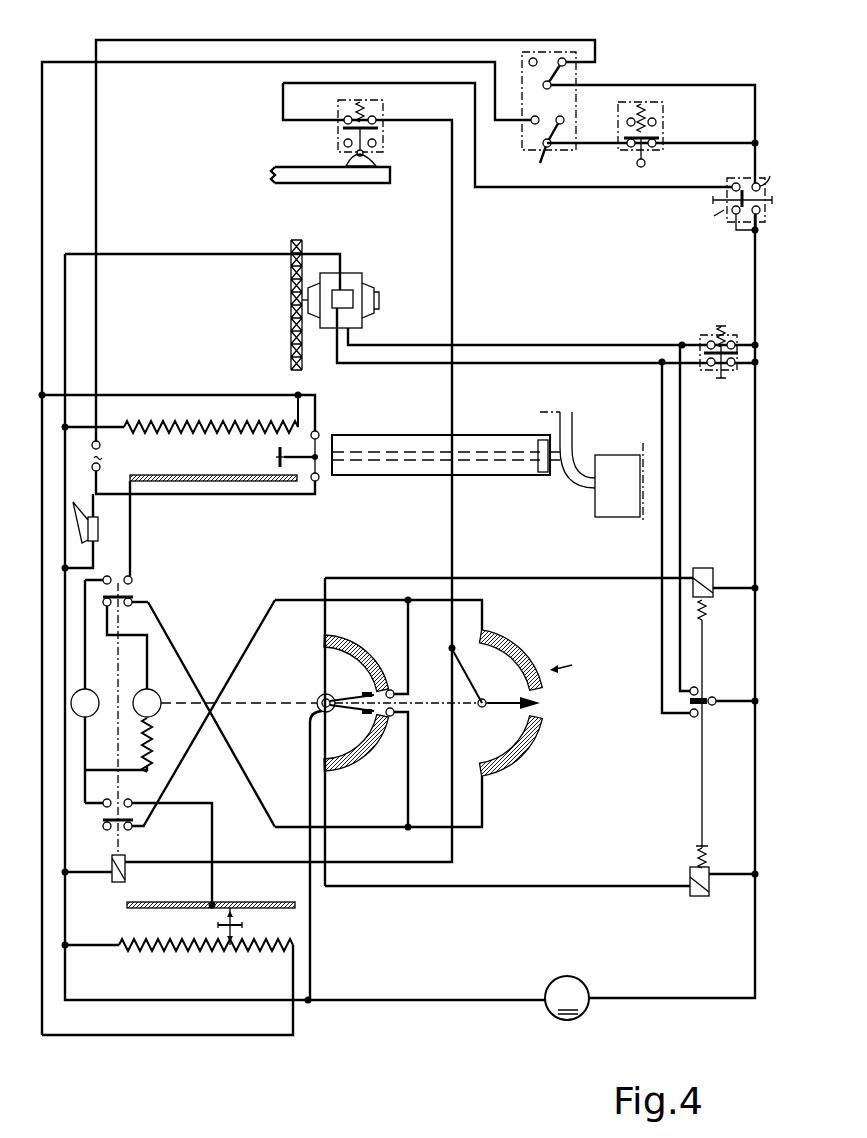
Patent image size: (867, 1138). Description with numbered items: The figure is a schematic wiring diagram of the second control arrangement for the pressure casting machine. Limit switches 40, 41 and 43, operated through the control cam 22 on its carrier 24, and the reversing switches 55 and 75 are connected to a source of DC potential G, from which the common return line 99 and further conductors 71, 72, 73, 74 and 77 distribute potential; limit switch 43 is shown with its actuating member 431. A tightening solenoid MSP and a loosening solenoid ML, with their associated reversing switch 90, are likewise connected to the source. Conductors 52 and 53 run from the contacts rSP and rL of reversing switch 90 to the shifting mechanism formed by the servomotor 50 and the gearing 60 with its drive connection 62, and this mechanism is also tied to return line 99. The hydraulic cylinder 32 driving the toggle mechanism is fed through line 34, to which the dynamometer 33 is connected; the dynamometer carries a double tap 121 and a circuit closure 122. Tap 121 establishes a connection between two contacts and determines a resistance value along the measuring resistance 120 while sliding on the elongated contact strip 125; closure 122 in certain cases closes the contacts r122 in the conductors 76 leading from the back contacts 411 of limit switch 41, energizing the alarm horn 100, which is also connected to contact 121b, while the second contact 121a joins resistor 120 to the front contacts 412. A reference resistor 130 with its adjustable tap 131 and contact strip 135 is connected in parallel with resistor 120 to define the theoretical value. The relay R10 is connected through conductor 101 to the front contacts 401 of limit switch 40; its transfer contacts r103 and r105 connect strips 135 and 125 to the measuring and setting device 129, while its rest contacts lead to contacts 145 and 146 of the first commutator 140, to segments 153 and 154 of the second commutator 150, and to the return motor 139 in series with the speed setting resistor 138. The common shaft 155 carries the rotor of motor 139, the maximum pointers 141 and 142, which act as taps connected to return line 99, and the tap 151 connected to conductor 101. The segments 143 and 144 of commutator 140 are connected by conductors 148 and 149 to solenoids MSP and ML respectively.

The conductors 76 is at (204, 42).
The supply line 74 is at (166, 65).
The common return line 99 is at (180, 258).
The conductor 77 is at (578, 190).
The conductor 101 is at (452, 298).
The gearing 60 is at (284, 337).
The pulley shaft 62 is at (290, 264).
The servomotor 50 is at (364, 287).
The conductor 52 is at (486, 367).
The conductor 53 is at (527, 347).
The reversing switch 55 is at (712, 385).
The conductor 72 is at (722, 84).
The conductor 71 is at (665, 1000).
The limit switch 41 is at (576, 79).
The back contacts 411 is at (560, 48).
The front contacts 412 is at (532, 142).
The conductor 73 is at (602, 144).
The limit switch 43 is at (656, 139).
The relay plunger 431 is at (648, 155).
The reversing switch 75 is at (726, 235).
The limit switch 40 is at (336, 117).
The front contacts 401 is at (370, 118).
The control cam 22 is at (346, 165).
The carrier 24 is at (308, 187).
The measuring resistance 120 is at (192, 414).
The second contact 121a is at (320, 433).
The double tap 121 is at (320, 482).
The contact 121b is at (310, 493).
The circuit closure 122 is at (276, 459).
The contacts r122 is at (122, 467).
The elongated contact strip 125 is at (180, 495).
The dynamometer 33 is at (483, 480).
The line 34 is at (573, 443).
The hydraulic cylinder 32 is at (600, 520).
The alarm horn 100 is at (100, 528).
The transfer contact r105 is at (132, 584).
The measuring and setting device 129 is at (110, 690).
The return motor 139 is at (161, 703).
The adjustable speed setting resistor 138 is at (160, 770).
The common shaft 155 is at (216, 708).
The first commutator 140 is at (315, 673).
The maximum pointer 141 is at (363, 690).
The maximum pointer 142 is at (355, 718).
The contact 145 is at (398, 692).
The contact 146 is at (396, 720).
The commutator segment 143 is at (342, 640).
The commutator segment 144 is at (342, 776).
The commutator segment 153 is at (508, 642).
The commutator segment 154 is at (512, 778).
The tap 151 is at (506, 710).
The second commutator 150 is at (587, 662).
The conductor 148 is at (502, 582).
The conductor 149 is at (470, 894).
The loosening solenoid ML is at (724, 572).
The tightening solenoid MSP is at (720, 900).
The reversing switch 90 is at (714, 715).
The contact rL is at (696, 688).
The contact rSP is at (686, 718).
The transfer contact r103 is at (145, 854).
The relay R10 is at (117, 860).
The contact strip 135 is at (226, 907).
The adjustable tap 131 is at (217, 932).
The reference resistor 130 is at (192, 957).